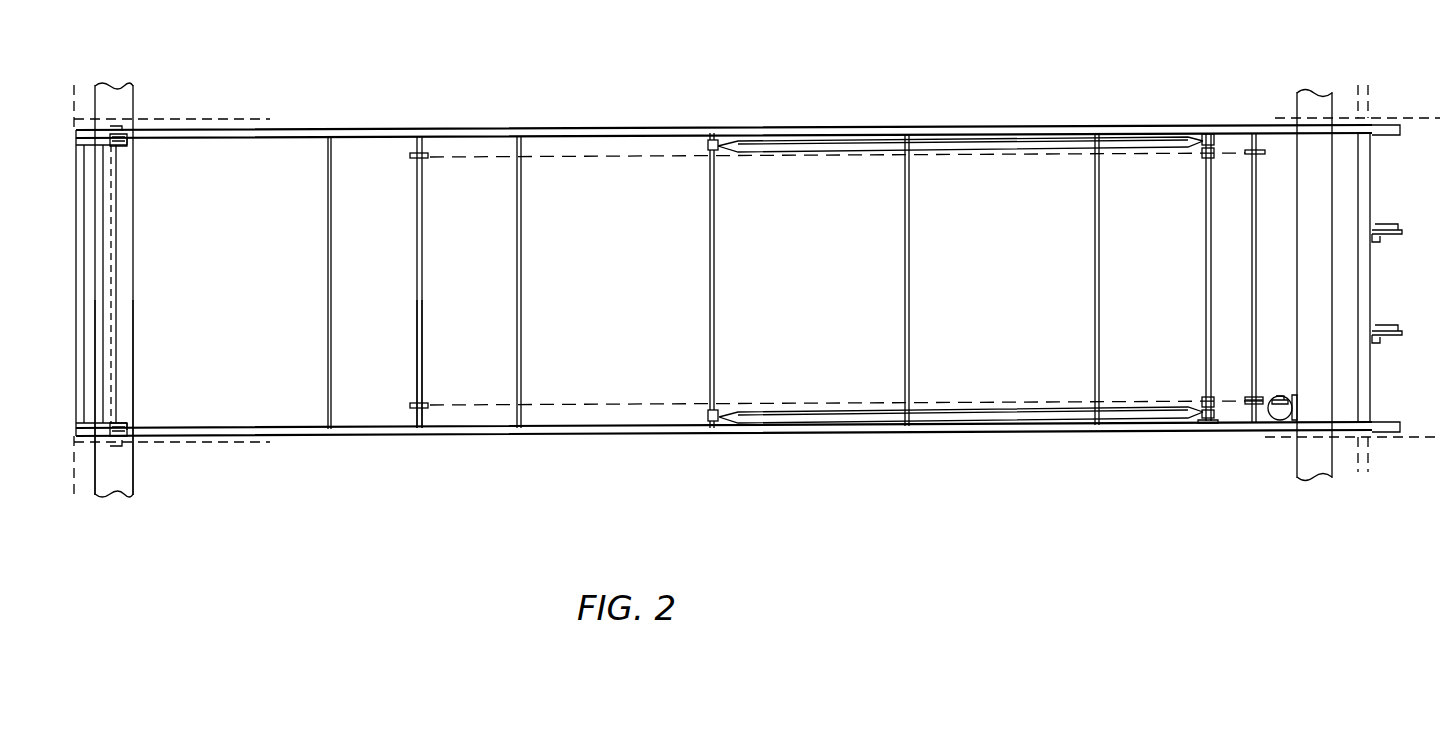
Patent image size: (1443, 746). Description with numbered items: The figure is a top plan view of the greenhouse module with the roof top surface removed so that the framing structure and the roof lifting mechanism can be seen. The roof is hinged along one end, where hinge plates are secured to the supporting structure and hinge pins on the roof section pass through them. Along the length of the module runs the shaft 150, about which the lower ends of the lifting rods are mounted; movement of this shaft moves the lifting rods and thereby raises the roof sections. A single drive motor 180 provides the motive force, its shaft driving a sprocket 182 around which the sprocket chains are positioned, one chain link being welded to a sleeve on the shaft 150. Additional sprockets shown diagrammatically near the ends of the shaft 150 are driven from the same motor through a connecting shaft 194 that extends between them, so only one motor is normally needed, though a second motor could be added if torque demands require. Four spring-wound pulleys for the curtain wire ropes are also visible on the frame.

The shaft 150 is at (1207, 268).
The drive motor 180 is at (1280, 420).
The sprocket 182 is at (1290, 398).
The connecting shaft 194 is at (1257, 265).